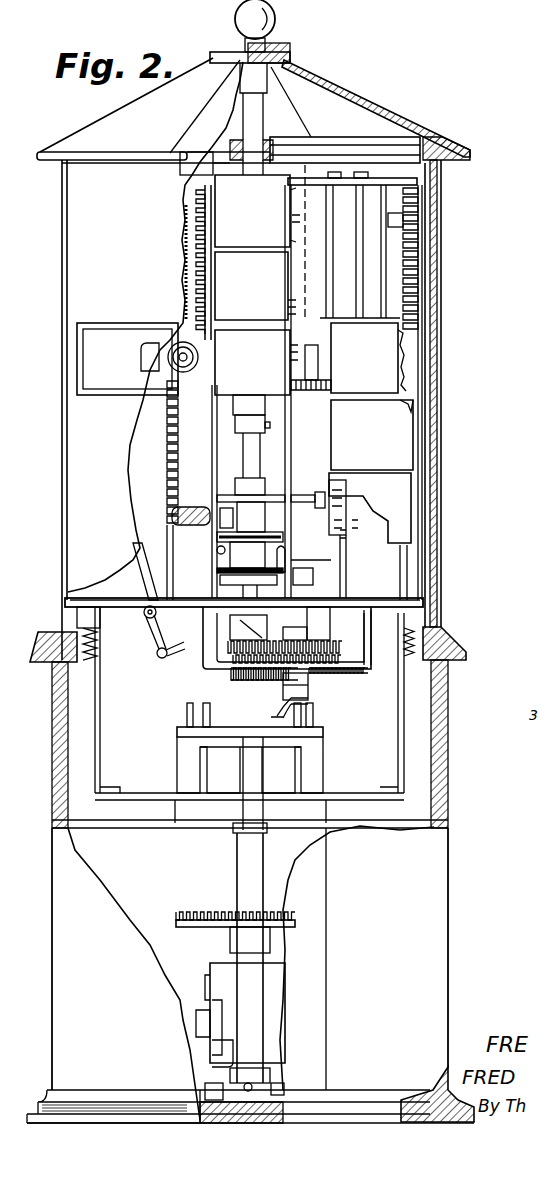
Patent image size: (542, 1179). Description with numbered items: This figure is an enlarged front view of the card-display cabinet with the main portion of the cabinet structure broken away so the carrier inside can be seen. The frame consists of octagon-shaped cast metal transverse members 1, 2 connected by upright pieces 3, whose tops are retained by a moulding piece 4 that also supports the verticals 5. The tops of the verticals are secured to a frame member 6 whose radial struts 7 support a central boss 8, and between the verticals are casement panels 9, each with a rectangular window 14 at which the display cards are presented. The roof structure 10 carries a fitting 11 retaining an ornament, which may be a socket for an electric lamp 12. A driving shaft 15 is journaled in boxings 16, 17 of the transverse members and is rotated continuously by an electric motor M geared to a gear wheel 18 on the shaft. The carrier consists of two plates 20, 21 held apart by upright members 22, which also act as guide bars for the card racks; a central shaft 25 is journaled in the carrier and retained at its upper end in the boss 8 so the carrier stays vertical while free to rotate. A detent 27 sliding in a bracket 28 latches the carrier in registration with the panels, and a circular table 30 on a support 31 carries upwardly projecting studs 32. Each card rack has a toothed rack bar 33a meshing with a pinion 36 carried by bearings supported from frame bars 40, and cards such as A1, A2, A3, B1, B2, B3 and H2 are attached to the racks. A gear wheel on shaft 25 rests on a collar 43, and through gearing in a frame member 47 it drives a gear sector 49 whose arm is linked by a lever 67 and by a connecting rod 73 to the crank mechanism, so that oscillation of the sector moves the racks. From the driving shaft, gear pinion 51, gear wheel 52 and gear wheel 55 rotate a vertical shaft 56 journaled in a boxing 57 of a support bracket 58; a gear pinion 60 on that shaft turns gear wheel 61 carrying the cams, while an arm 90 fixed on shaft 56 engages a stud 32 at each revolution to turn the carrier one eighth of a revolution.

The transverse member 1 is at (212, 1121).
The transverse member 2 is at (105, 827).
The upright piece 3 is at (240, 120).
The moulding piece 4 is at (50, 637).
The vertical 5 is at (72, 357).
The frame member 6 is at (442, 148).
The radial strut 7 is at (333, 140).
The central boss 8 is at (262, 132).
The panel 9 is at (62, 200).
The roof structure 10 is at (344, 87).
The fitting 11 is at (284, 50).
The electric lamp 12 is at (276, 20).
The window 14 is at (127, 347).
The driving shaft 15 is at (262, 880).
The boxing 16 is at (240, 833).
The boxing 17 is at (282, 1066).
The gear wheel 18 is at (217, 911).
The carrier plate 20 is at (388, 600).
The carrier plate 21 is at (374, 178).
The upright member 22 is at (177, 572).
The shaft 25 is at (250, 138).
The detent 27 is at (89, 663).
The bracket 28 is at (100, 622).
The circular table 30 is at (181, 738).
The support 31 is at (207, 766).
The stud 32 is at (186, 713).
The rack bar 33a is at (196, 208).
The pinion 36 is at (192, 398).
The frame bar 40 is at (343, 236).
The collar 43 is at (236, 428).
The frame member 47 is at (338, 540).
The gear sector 49 is at (301, 495).
The gear pinion 51 is at (233, 681).
The gear wheel 52 is at (366, 673).
The gear wheel 55 is at (372, 645).
The vertical shaft 56 is at (329, 623).
The boxing 57 is at (309, 682).
The support bracket 58 is at (208, 662).
The gear pinion 60 is at (322, 645).
The gear wheel 61 is at (222, 648).
The lever 67 is at (147, 560).
The connecting rod 73 is at (191, 527).
The arm 90 is at (314, 714).
The display card A1 is at (273, 362).
The display card A2 is at (257, 211).
The display card A3 is at (255, 286).
The display card B1 is at (370, 508).
The display card B2 is at (368, 358).
The display card B3 is at (372, 435).
The display card H2 is at (116, 359).
The electric motor M is at (208, 970).